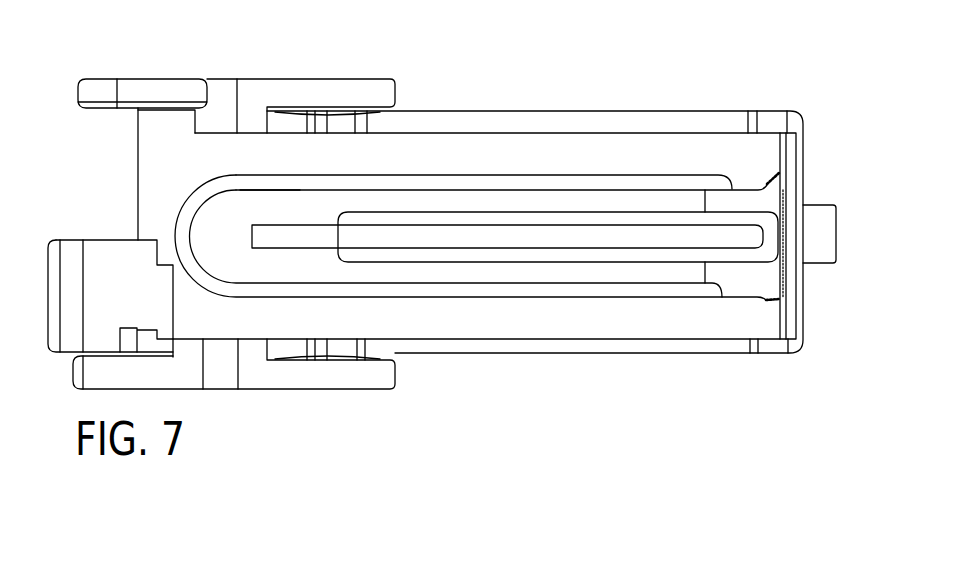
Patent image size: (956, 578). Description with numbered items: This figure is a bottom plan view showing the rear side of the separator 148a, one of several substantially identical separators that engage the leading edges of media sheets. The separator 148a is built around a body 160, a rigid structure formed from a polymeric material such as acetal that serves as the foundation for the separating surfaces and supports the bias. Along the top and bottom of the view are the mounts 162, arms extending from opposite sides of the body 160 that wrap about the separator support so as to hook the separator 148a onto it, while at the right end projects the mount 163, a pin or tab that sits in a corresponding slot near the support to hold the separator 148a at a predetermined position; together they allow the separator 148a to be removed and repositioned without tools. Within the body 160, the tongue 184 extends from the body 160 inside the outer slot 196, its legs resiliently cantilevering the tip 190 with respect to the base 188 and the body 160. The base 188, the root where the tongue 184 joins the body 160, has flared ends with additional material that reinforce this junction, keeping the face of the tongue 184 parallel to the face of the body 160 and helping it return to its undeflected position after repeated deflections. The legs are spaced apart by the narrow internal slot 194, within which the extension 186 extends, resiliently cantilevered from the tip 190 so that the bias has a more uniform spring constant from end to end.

The separator 148a is at (462, 50).
The body 160 is at (511, 118).
The mounts 162 is at (317, 80).
The mount 163 is at (837, 217).
The tongue 184 is at (270, 190).
The extension 186 is at (649, 225).
The base 188 is at (767, 182).
The tip 190 is at (197, 222).
The internal slot 194 is at (767, 251).
The outer slot 196 is at (198, 193).